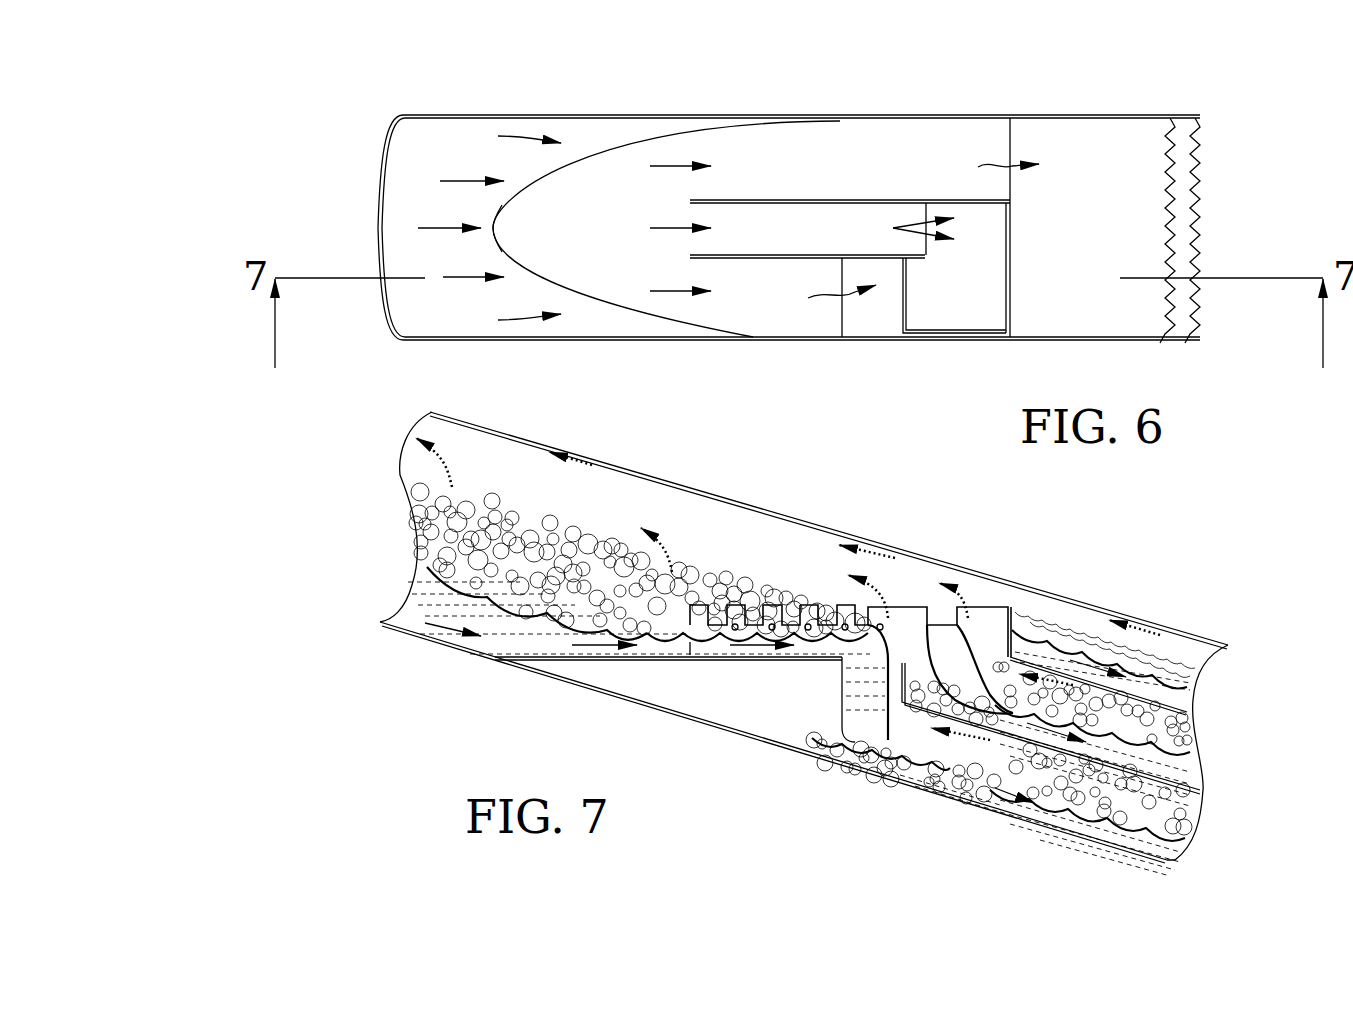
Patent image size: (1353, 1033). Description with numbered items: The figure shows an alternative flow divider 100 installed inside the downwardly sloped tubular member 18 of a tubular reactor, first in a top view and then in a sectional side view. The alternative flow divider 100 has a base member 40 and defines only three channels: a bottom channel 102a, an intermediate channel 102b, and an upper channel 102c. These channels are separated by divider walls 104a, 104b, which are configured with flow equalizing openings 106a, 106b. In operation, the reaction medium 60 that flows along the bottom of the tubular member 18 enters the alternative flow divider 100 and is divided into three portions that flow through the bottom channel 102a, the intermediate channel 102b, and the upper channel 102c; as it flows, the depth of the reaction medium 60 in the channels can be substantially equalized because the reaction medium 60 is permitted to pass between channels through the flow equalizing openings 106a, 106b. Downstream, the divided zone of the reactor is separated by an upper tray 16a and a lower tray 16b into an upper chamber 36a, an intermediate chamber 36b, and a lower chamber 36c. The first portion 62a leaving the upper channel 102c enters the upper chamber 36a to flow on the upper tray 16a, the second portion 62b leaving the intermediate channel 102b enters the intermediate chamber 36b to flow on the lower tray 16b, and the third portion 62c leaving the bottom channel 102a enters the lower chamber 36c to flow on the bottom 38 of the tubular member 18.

In FIG. 6, the tubular member 18 is at (891, 118).
In FIG. 7, the tubular member 18 is at (673, 483).
In FIG. 6, the base member 40 is at (536, 199).
In FIG. 6, the alternative flow divider 100 is at (591, 154).
In FIG. 6, the bottom channel 102a is at (790, 300).
In FIG. 7, the bottom channel 102a is at (515, 645).
In FIG. 6, the intermediate channel 102b is at (726, 229).
In FIG. 6, the upper channel 102c is at (794, 168).
In FIG. 6, the divider wall 104a is at (756, 260).
In FIG. 7, the divider wall 104a is at (902, 622).
In FIG. 6, the divider wall 104b is at (756, 200).
In FIG. 7, the divider wall 104b is at (990, 622).
In FIG. 7, the flow equalizing opening 106a is at (790, 625).
In FIG. 7, the flow equalizing opening 106b is at (880, 625).
In FIG. 6, the upper tray 16a is at (1149, 188).
In FIG. 7, the upper tray 16a is at (1142, 698).
In FIG. 6, the lower tray 16b is at (1182, 212).
In FIG. 7, the lower tray 16b is at (1022, 738).
In FIG. 6, the bottom of tubular member 38 is at (874, 322).
In FIG. 7, the bottom of tubular member 38 is at (917, 768).
In FIG. 7, the reaction medium 60 is at (452, 565).
In FIG. 7, the upper chamber 36a is at (1185, 652).
In FIG. 7, the intermediate chamber 36b is at (1178, 730).
In FIG. 7, the lower chamber 36c is at (1185, 805).
In FIG. 7, the first portion 62a is at (1172, 692).
In FIG. 7, the second portion 62b is at (1185, 768).
In FIG. 7, the third portion 62c is at (1170, 843).